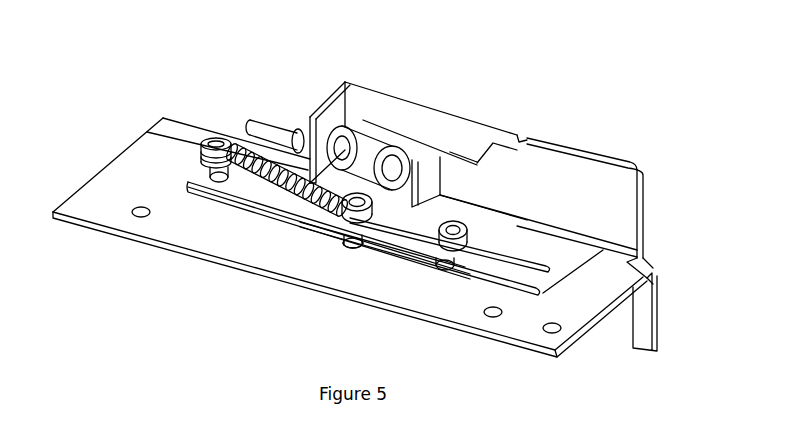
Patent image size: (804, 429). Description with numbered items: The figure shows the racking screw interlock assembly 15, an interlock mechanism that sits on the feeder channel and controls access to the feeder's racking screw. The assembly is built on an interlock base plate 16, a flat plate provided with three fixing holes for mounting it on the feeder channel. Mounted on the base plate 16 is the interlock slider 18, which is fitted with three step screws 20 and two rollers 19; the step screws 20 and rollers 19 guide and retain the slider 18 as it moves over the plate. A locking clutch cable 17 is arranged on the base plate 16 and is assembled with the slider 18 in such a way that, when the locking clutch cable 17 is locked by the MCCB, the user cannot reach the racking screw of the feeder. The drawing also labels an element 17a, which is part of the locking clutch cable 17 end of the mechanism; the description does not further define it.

The racking screw interlock assembly 15 is at (108, 72).
The interlock base plate 16 is at (568, 157).
The locking clutch cable 17 is at (381, 163).
The motor shaft 17a is at (263, 127).
The interlock slider 18 is at (278, 215).
The roller 19 is at (353, 243).
The step screw 20 is at (213, 155).